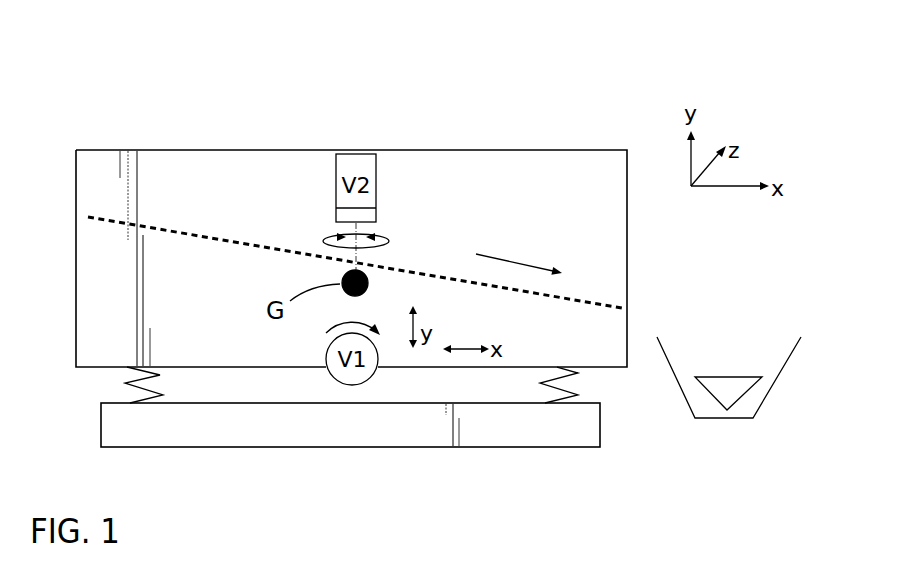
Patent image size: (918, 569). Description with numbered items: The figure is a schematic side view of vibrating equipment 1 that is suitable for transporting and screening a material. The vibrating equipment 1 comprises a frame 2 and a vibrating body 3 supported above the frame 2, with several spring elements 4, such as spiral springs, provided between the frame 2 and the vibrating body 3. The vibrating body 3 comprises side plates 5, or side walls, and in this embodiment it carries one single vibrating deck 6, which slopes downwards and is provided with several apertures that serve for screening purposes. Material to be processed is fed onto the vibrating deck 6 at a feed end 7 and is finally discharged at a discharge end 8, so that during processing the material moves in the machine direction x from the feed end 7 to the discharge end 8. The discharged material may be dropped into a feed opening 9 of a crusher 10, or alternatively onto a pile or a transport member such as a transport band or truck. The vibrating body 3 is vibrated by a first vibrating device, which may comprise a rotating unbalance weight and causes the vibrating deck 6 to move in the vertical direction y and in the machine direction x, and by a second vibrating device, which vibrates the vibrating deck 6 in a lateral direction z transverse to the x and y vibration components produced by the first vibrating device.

The vibrating equipment 1 is at (128, 64).
The frame 2 is at (284, 433).
The vibrating body 3 is at (220, 132).
The spring elements 4 is at (117, 383).
The side plates 5 is at (100, 200).
The vibrating deck 6 is at (247, 243).
The feed end 7 is at (82, 111).
The discharge end 8 is at (622, 127).
The feed opening 9 is at (680, 340).
The crusher 10 is at (710, 450).